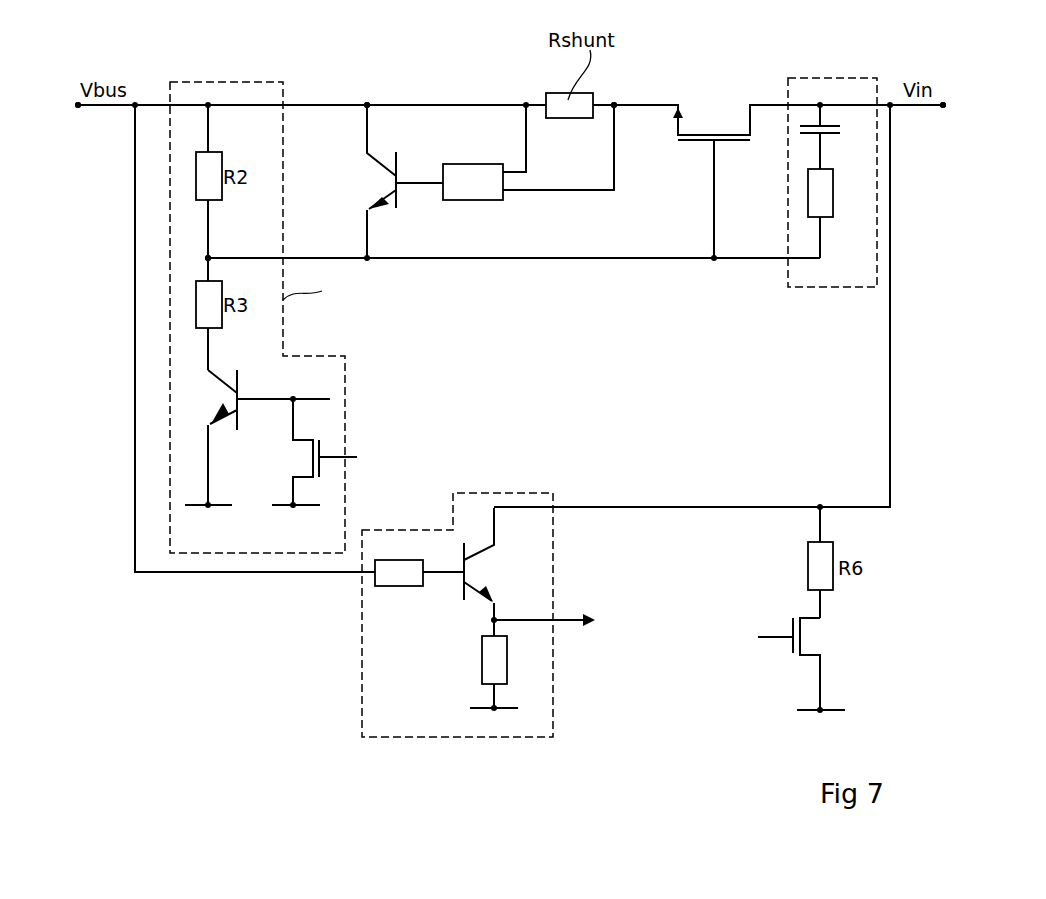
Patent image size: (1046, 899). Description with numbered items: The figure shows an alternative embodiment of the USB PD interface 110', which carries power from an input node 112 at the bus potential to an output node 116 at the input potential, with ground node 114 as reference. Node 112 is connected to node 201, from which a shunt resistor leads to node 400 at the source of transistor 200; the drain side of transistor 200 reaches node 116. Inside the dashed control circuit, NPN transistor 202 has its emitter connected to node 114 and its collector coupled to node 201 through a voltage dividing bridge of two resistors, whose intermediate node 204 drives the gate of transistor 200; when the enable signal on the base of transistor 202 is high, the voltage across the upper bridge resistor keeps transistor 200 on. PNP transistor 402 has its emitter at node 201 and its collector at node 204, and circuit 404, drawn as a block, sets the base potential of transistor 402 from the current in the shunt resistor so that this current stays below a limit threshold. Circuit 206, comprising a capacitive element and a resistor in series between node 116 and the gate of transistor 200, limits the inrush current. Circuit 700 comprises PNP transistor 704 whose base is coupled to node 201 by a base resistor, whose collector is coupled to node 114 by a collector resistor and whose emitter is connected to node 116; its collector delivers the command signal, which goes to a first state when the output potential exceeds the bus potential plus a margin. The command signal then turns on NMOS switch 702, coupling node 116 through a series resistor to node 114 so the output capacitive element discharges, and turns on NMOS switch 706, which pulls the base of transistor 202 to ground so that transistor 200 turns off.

The interface 110' is at (256, 276).
The node 112 is at (78, 108).
The node 116 is at (943, 108).
The node 201 is at (367, 101).
The NPN transistor 202 is at (213, 396).
The intermediate node 204 is at (211, 256).
The circuit 206 is at (820, 77).
The transistor 200 is at (715, 114).
The node 400 is at (615, 101).
The PNP transistor 402 is at (392, 182).
The circuit 404 is at (528, 152).
The node 114 is at (210, 504).
The circuit 700 is at (555, 700).
The switch 702 is at (818, 637).
The PNP transistor 704 is at (486, 573).
The switch 706 is at (330, 434).